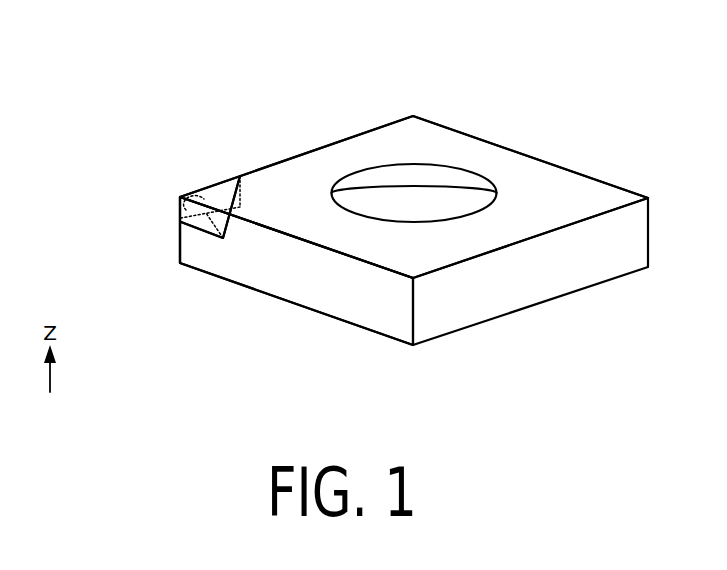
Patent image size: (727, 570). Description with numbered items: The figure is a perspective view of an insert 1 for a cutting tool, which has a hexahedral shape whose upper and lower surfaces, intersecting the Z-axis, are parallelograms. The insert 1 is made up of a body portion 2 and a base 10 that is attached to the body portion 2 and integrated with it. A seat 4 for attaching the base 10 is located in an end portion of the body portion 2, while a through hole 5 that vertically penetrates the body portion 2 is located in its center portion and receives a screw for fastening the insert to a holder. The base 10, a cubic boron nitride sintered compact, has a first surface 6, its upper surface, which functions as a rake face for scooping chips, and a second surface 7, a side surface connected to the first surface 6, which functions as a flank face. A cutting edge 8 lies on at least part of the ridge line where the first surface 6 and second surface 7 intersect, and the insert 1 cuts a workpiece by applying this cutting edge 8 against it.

The insert 1 is at (172, 57).
The body portion 2 is at (349, 162).
The seat 4 is at (207, 218).
The through hole 5 is at (464, 181).
The first surface 6 is at (211, 196).
The second surface 7 is at (180, 213).
The cutting edge 8 is at (179, 248).
The base 10 is at (170, 167).